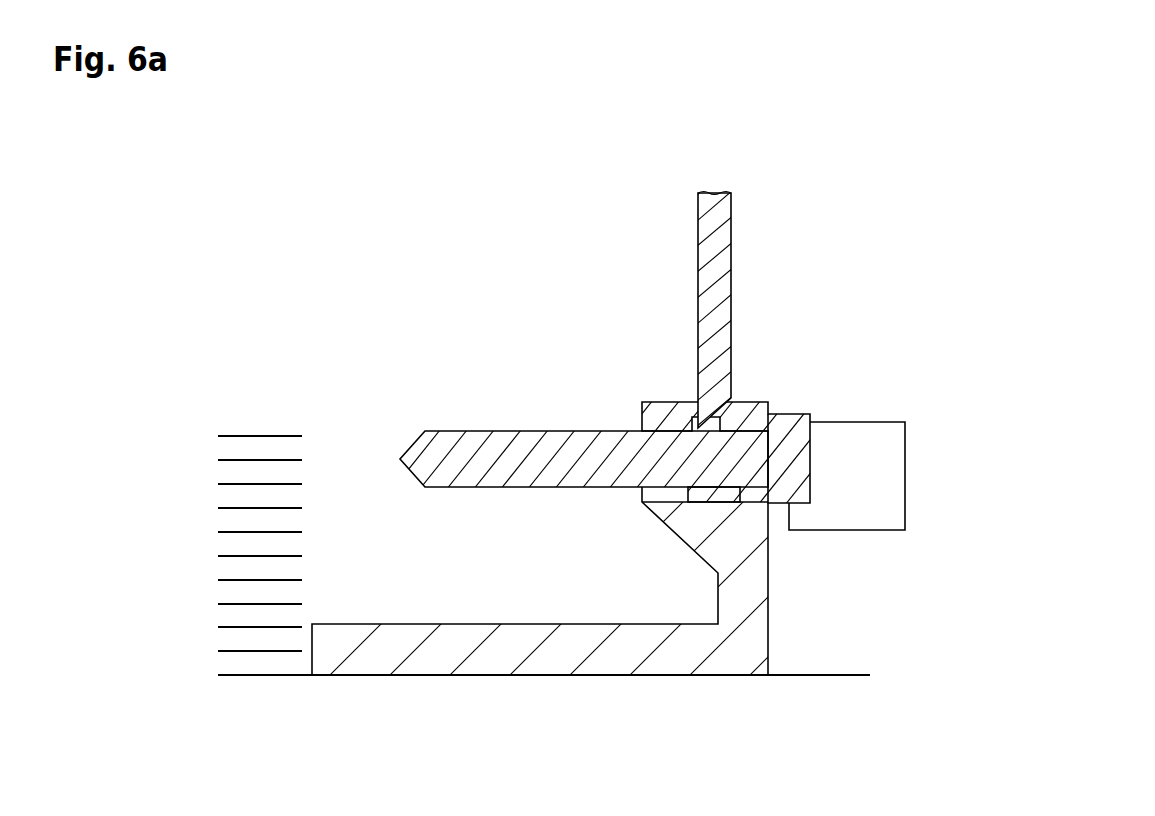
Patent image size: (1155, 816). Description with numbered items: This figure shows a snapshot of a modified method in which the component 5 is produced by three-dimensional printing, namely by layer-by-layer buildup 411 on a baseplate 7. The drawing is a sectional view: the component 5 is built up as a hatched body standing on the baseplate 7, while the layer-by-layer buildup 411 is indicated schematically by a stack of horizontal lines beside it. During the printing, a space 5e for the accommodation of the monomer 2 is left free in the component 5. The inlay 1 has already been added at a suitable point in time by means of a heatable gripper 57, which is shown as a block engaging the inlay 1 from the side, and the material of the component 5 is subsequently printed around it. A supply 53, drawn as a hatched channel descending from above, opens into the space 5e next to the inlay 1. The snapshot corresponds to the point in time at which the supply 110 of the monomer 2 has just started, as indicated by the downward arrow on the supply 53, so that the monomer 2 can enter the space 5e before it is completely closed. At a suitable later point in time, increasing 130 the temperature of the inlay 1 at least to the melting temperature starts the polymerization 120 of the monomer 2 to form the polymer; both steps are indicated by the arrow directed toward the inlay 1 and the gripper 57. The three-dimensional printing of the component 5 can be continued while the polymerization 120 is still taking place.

The inlay 1 is at (788, 428).
The monomer 2 is at (712, 120).
The component 5 is at (611, 660).
The space 5e is at (690, 493).
The baseplate 7 is at (821, 678).
The supply 53 is at (720, 275).
The heatable gripper 57 is at (858, 502).
The supply of the monomer 110 is at (713, 152).
The polymerization 120 is at (1055, 492).
The increasing the temperature 130 is at (972, 489).
The layer-by-layer buildup 411 is at (268, 447).